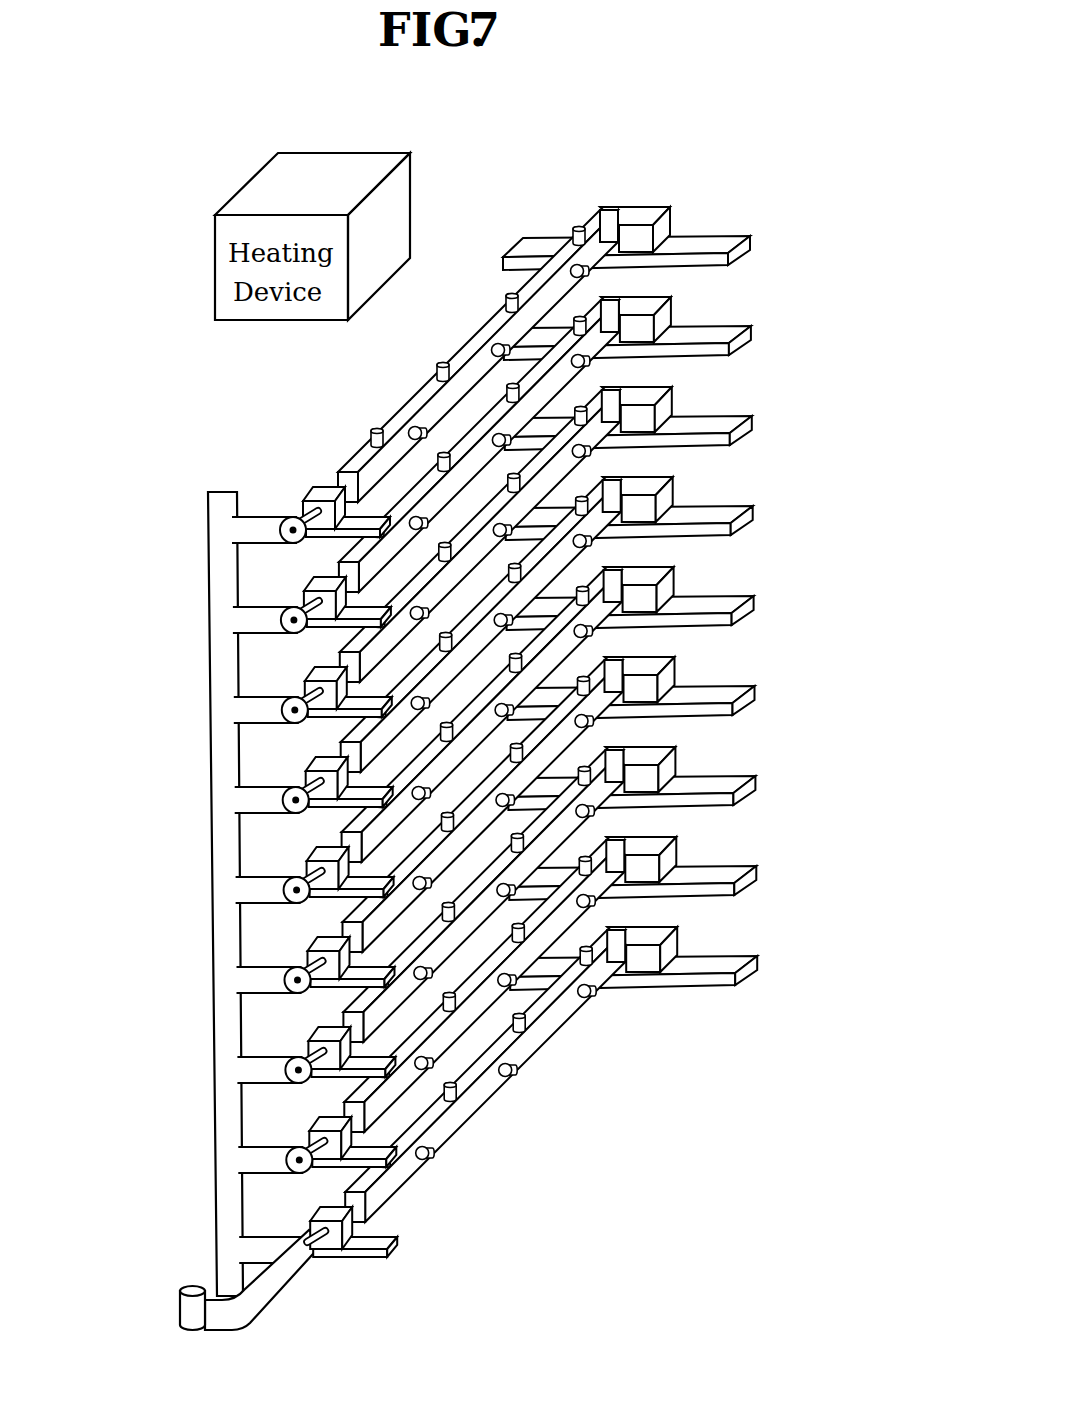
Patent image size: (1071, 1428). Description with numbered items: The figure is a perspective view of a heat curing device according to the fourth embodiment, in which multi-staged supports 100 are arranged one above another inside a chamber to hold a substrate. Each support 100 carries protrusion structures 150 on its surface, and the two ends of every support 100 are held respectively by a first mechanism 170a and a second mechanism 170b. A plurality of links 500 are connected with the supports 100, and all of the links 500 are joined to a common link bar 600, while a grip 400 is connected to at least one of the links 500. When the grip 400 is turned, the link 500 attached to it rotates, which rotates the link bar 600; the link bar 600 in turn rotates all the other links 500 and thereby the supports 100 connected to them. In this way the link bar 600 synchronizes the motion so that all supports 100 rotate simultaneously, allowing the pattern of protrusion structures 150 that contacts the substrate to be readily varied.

The support 100 is at (415, 402).
The protrusion structure 150 is at (443, 366).
The first mechanism 170a is at (327, 496).
The second mechanism 170b is at (652, 211).
The grip 400 is at (180, 1306).
The link 500 is at (267, 516).
The link bar 600 is at (221, 584).